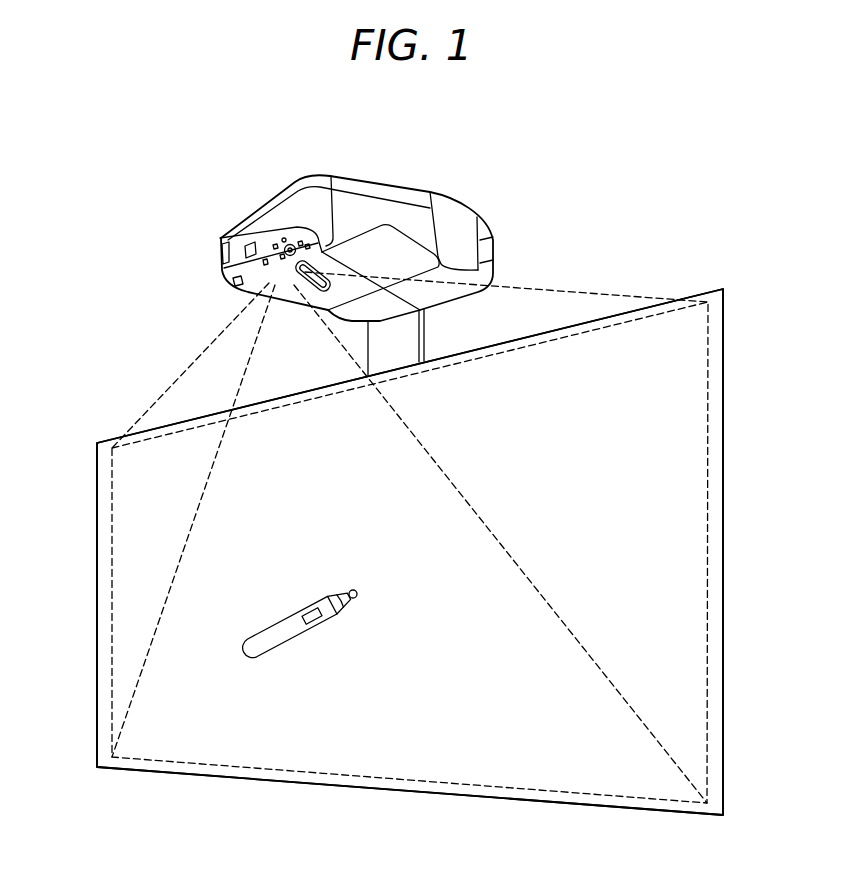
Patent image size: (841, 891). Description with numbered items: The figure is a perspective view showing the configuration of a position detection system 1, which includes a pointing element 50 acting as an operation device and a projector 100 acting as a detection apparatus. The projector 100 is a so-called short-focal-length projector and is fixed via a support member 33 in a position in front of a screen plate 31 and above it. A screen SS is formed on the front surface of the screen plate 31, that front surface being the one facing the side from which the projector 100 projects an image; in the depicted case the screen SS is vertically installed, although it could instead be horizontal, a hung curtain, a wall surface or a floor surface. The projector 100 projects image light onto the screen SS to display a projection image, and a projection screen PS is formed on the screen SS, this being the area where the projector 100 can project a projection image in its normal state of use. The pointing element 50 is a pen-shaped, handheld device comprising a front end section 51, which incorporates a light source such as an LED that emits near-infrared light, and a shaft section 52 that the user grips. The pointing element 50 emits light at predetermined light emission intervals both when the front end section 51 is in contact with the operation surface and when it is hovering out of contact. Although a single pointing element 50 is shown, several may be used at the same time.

The position detection system 1 is at (610, 205).
The projector 100 is at (376, 178).
The screen plate 31 is at (714, 288).
The support member 33 is at (427, 333).
The projection screen PS is at (112, 537).
The screen SS is at (97, 617).
The pointing element 50 is at (264, 616).
The front end section 51 is at (360, 591).
The shaft section 52 is at (297, 633).